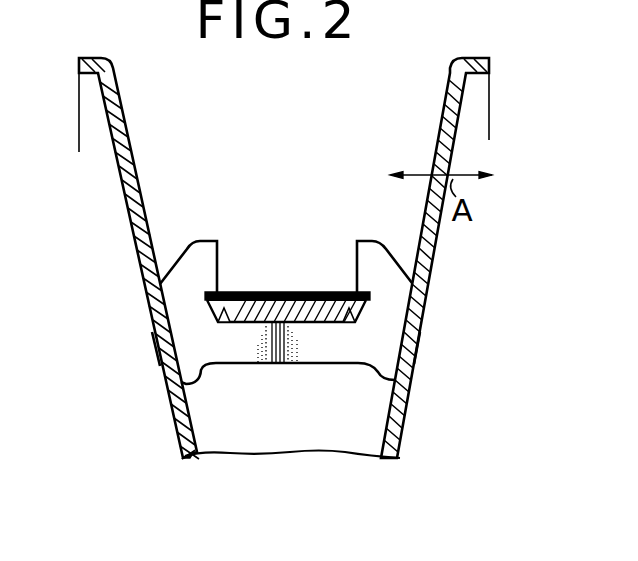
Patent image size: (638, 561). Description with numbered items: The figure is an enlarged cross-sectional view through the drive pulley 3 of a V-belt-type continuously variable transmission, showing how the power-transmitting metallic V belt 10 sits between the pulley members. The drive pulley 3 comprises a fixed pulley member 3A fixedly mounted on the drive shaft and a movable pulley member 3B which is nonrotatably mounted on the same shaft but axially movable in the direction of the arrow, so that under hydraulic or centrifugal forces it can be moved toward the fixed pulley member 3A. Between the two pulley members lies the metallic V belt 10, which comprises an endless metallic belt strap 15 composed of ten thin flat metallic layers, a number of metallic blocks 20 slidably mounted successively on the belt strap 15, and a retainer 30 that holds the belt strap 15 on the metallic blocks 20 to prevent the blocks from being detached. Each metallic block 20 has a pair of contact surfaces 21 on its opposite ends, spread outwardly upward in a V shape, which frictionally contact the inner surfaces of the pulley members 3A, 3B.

The drive pulley 3 is at (385, 104).
The fixed pulley member 3A is at (136, 165).
The movable pulley member 3B is at (439, 139).
The metallic V belt 10 is at (276, 234).
The belt strap 15 is at (258, 322).
The metallic block 20 is at (208, 241).
The contact surface 21 is at (159, 350).
The retainer 30 is at (247, 294).